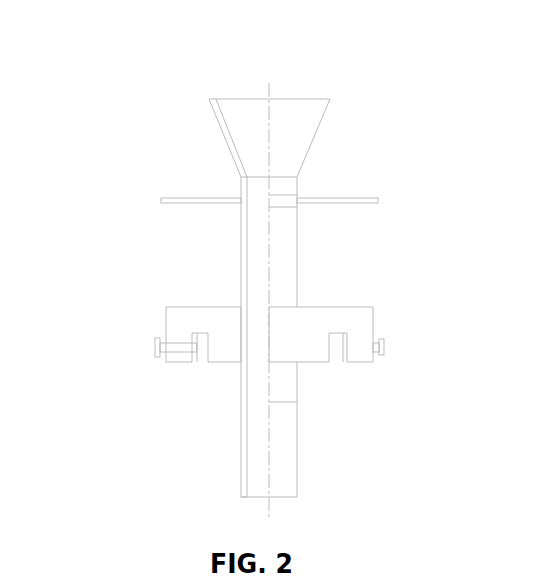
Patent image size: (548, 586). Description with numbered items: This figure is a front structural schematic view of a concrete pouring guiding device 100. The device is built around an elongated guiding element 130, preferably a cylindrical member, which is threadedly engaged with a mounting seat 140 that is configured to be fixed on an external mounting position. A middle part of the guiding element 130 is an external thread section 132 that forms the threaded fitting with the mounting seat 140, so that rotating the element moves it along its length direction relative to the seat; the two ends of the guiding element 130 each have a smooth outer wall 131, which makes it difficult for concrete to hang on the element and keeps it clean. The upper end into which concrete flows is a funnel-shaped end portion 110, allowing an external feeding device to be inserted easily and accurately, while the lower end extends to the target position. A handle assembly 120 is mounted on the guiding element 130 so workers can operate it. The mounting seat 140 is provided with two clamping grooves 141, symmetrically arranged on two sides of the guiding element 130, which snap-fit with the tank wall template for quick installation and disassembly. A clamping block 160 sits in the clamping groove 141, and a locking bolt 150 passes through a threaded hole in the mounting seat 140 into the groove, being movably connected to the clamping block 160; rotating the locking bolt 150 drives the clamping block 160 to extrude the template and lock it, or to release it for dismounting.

The concrete pouring guiding device 100 is at (206, 67).
The funnel-shaped end portion 110 is at (232, 130).
The handle assembly 120 is at (180, 201).
The guiding element 130 is at (241, 418).
The smooth outer wall 131 is at (288, 446).
The external thread section 132 is at (285, 266).
The mounting seat 140 is at (182, 320).
The clamping groove 141 is at (337, 350).
The locking bolt 150 is at (155, 350).
The clamping block 160 is at (199, 363).